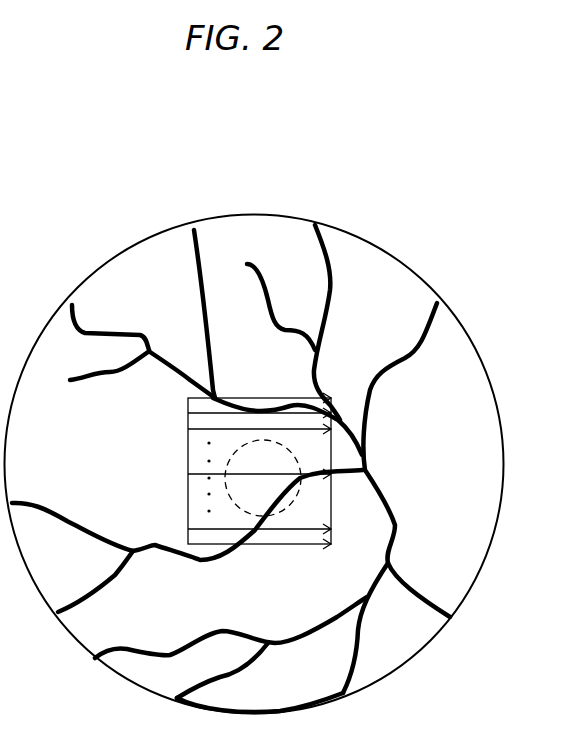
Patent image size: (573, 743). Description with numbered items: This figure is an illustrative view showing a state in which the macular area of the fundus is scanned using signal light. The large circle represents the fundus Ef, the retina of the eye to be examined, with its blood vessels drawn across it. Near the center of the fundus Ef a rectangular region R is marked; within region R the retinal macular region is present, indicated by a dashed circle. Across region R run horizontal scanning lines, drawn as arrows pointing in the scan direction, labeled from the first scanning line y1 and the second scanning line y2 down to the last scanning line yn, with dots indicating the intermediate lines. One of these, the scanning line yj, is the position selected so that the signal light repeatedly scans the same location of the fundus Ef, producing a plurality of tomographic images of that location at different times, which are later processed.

The fundus Ef is at (407, 268).
The region R is at (229, 458).
The scanning line y1 is at (248, 405).
The scanning line y2 is at (248, 429).
The scanning line yj is at (248, 476).
The scanning line yn is at (248, 536).